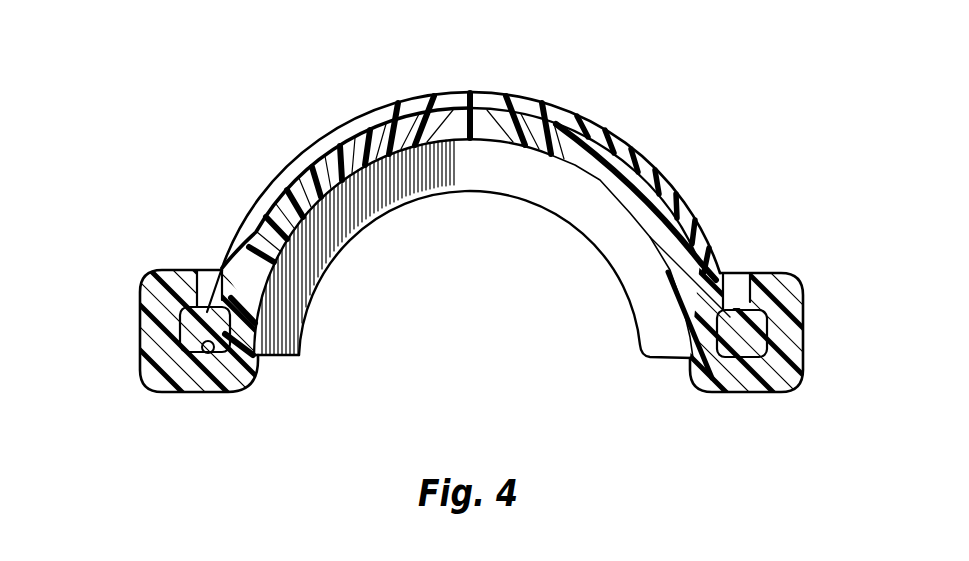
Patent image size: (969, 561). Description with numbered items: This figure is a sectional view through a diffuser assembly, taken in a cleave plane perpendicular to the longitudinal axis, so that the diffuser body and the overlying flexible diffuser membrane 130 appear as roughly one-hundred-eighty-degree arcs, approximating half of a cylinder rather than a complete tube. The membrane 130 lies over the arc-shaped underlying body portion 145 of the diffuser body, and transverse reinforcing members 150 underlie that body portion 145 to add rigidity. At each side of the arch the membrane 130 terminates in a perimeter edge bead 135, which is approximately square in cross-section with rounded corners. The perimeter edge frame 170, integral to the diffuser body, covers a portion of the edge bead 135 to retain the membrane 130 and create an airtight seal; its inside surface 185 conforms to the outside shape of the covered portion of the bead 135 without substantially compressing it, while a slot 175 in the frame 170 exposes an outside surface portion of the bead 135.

The flexible diffuser membrane 130 is at (357, 106).
The perimeter edge bead 135 is at (758, 310).
The arc-shaped underlying body portion 145 is at (590, 182).
The transverse reinforcing members 150 is at (643, 302).
The perimeter edge frame 170 is at (199, 311).
The slot 175 is at (208, 268).
The inside surface 185 is at (205, 355).